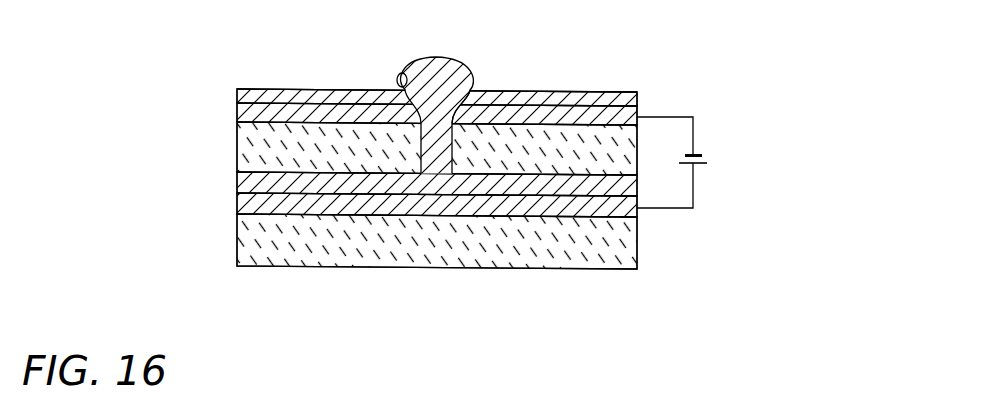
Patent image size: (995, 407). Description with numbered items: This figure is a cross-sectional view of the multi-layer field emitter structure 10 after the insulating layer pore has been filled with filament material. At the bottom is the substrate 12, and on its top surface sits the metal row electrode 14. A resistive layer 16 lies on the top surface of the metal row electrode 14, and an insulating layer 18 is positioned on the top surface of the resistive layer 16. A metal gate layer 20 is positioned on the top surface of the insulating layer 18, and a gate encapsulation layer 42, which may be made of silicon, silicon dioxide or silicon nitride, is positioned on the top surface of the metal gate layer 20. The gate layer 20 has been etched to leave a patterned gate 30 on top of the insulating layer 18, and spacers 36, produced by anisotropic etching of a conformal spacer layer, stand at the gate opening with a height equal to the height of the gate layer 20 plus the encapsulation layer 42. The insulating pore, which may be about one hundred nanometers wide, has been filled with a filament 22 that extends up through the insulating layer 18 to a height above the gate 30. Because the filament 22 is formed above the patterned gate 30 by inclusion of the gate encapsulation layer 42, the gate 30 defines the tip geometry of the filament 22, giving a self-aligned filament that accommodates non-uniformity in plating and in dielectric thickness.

The field emitter structure 10 is at (148, 162).
The substrate 12 is at (237, 244).
The metal row electrode 14 is at (237, 211).
The resistive layer 16 is at (237, 189).
The insulating layer 18 is at (237, 153).
The metal gate layer 20 is at (237, 113).
The gate encapsulation layer 42 is at (294, 89).
The filament 22 is at (432, 60).
The gate 30 is at (397, 77).
The spacers 36 is at (472, 88).